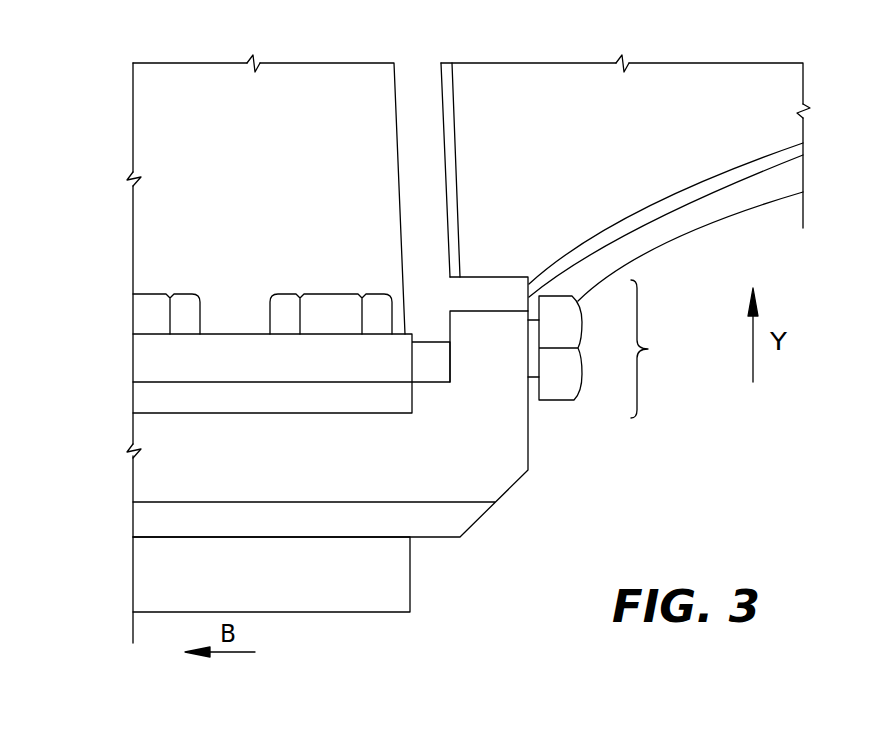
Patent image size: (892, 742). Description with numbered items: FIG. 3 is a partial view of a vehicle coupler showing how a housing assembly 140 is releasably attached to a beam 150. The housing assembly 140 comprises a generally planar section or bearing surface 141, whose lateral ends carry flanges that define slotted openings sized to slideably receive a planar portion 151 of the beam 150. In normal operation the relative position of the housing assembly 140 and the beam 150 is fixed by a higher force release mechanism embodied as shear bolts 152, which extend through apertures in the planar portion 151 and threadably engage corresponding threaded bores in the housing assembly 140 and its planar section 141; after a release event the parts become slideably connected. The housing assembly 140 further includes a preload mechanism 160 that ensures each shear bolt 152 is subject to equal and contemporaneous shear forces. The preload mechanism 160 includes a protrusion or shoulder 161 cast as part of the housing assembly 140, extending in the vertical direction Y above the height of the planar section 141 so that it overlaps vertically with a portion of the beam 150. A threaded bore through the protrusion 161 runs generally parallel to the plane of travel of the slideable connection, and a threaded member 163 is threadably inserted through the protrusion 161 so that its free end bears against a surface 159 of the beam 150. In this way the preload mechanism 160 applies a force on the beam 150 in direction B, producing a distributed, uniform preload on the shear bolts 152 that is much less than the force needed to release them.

The housing assembly 140 is at (392, 570).
The planar section 141 is at (145, 427).
The beam 150 is at (688, 80).
The planar portion 151 is at (145, 358).
The shear bolts 152 is at (323, 308).
The surface 159 is at (450, 311).
The preload mechanism 160 is at (665, 349).
The protrusion 161 is at (500, 298).
The threaded member 163 is at (562, 390).